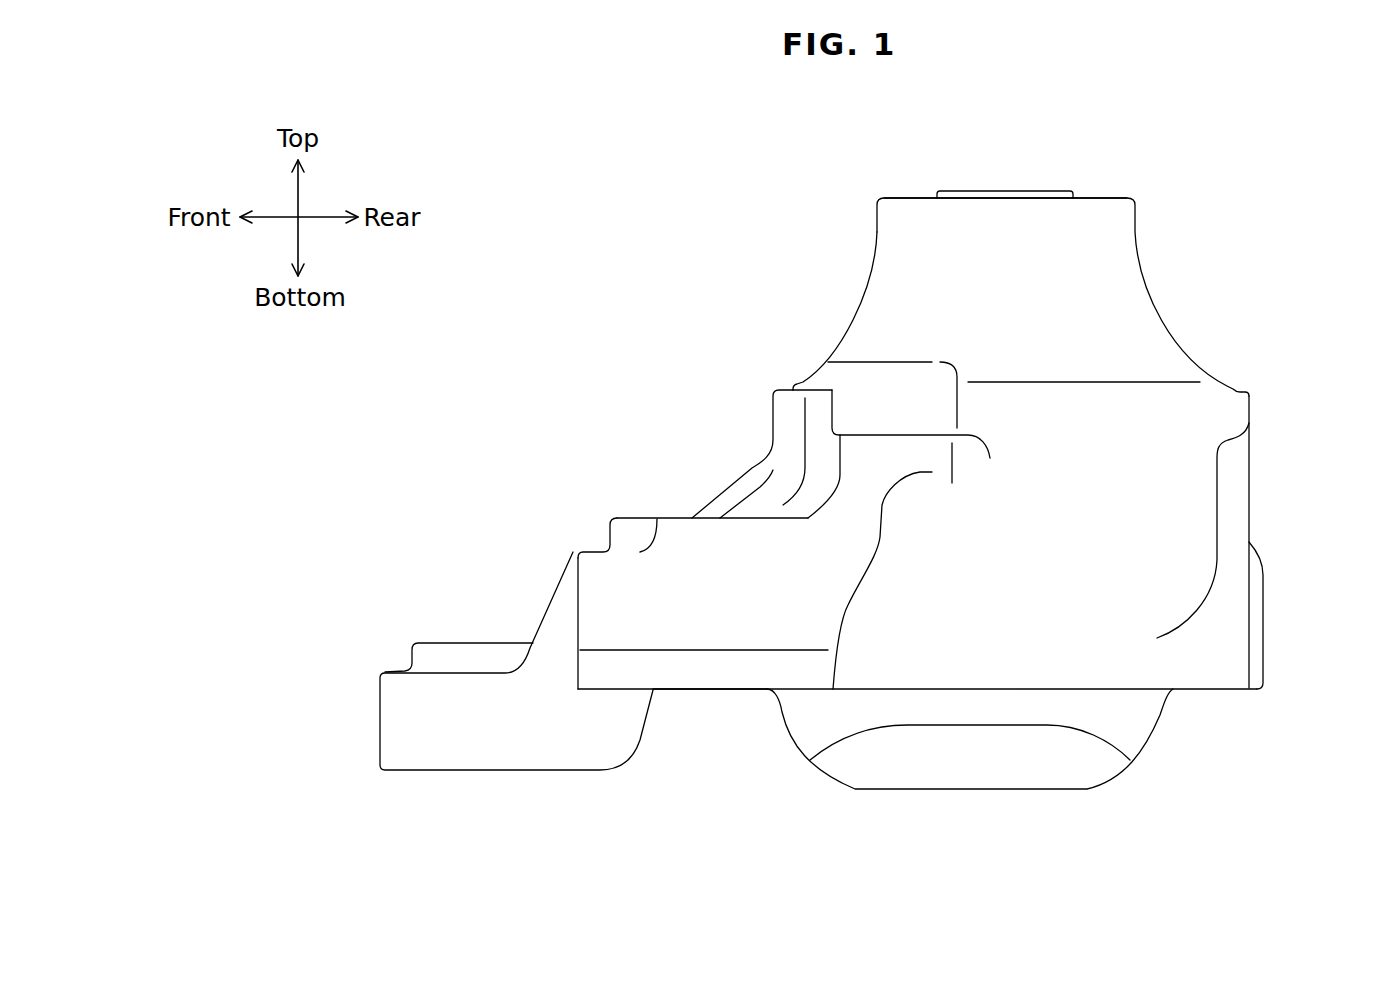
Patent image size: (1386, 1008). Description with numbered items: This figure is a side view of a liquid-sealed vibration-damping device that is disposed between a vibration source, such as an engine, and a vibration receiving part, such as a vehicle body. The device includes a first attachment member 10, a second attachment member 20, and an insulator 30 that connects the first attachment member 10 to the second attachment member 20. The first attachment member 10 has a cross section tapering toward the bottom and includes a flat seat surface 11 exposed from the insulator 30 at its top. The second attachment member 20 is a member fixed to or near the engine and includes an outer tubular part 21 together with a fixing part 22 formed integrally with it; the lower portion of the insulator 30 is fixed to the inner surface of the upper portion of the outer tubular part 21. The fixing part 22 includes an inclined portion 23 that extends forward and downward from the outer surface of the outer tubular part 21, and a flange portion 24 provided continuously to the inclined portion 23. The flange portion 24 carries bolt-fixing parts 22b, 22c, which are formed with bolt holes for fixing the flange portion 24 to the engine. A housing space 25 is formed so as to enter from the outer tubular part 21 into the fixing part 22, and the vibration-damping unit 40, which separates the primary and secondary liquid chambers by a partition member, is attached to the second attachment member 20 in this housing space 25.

The first attachment member 10 is at (1047, 186).
The flat seat surface 11 is at (960, 190).
The second attachment member 20 is at (1258, 433).
The outer tubular part 21 is at (1238, 484).
The fixing part 22 is at (650, 433).
The bolt-fixing part 22b is at (447, 640).
The bolt-fixing part 22c is at (643, 517).
The inclined portion 23 is at (745, 480).
The flange portion 24 is at (535, 740).
The housing space 25 is at (740, 740).
The insulator 30 is at (1166, 309).
The vibration-damping unit 40 is at (1156, 774).